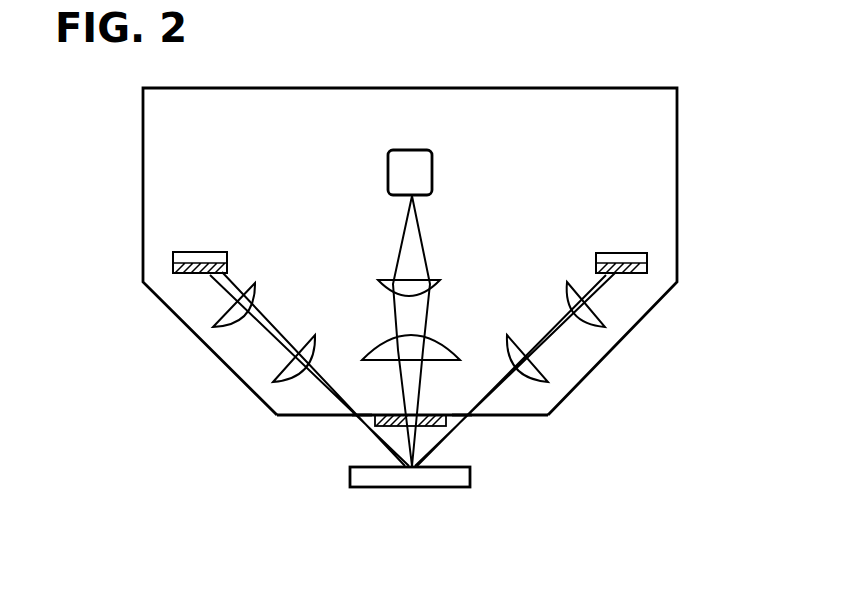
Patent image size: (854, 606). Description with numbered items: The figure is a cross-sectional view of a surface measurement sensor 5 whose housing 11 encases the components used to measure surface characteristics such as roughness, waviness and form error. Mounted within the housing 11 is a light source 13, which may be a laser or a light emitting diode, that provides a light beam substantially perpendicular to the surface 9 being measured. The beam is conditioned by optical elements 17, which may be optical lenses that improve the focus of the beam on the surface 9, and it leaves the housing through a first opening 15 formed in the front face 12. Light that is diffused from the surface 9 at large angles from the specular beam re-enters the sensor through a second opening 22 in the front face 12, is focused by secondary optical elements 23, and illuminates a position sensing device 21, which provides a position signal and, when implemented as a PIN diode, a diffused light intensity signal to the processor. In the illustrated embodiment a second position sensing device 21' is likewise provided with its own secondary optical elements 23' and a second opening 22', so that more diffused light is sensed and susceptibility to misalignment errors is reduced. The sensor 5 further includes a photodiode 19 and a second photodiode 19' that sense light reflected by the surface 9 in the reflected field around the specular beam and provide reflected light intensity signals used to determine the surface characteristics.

The surface measurement sensor 5 is at (578, 72).
The housing 11 is at (143, 197).
The front face 12 is at (286, 419).
The first opening 15 is at (418, 412).
The light source 13 is at (413, 148).
The optical elements 17 is at (448, 338).
The surface 9 is at (455, 490).
The position sensing device 21 is at (629, 238).
The second position sensing device 21' is at (228, 238).
The photodiode 19 is at (515, 374).
The second photodiode 19' is at (309, 374).
The secondary optical elements 23 is at (556, 292).
The secondary optical elements 23' is at (275, 316).
The second opening 22 is at (502, 401).
The second opening 22' is at (361, 363).